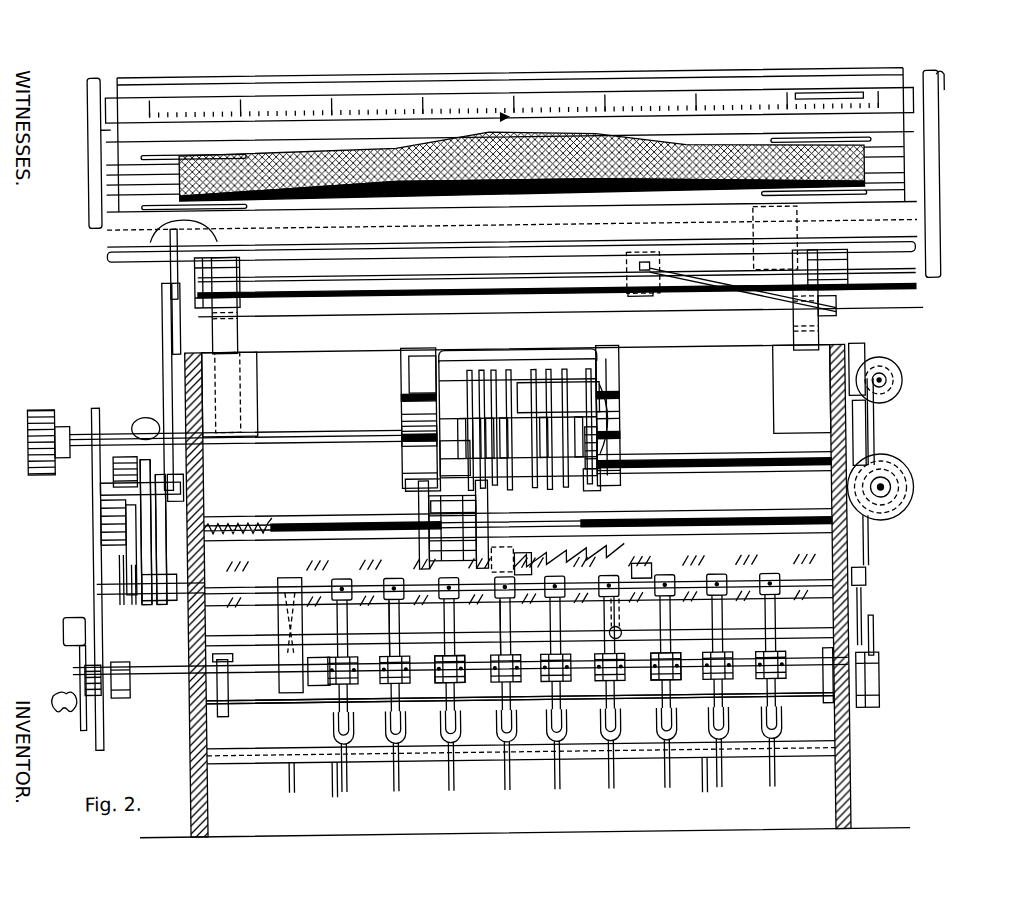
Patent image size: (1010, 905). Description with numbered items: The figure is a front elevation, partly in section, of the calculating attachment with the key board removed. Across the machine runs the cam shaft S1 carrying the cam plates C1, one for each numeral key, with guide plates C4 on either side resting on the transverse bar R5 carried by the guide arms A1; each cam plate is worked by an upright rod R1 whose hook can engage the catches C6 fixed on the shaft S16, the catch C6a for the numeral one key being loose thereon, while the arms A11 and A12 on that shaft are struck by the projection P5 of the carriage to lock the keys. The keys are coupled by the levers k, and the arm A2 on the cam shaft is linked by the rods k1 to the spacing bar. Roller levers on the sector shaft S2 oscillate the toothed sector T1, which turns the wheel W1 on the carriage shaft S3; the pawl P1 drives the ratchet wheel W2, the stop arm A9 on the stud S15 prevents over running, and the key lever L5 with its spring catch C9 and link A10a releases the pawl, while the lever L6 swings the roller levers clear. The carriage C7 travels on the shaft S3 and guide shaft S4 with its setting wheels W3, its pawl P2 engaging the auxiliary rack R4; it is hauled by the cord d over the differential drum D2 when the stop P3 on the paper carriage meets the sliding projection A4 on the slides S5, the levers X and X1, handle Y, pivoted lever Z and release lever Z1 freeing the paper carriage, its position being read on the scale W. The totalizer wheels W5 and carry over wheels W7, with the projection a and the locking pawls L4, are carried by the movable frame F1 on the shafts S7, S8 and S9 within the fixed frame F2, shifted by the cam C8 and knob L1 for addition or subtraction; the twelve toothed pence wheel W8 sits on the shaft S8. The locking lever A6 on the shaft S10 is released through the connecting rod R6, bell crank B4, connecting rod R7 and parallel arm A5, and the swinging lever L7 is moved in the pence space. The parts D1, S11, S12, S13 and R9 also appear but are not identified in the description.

The carriage release lever Z1 is at (92, 223).
The scale W is at (515, 495).
The wheel W1 is at (100, 518).
The stop or projection P3 is at (772, 258).
The pivoted lever Z is at (172, 265).
The lever X is at (846, 272).
The depending lever X1 is at (164, 355).
The sliding projection A4 is at (650, 276).
The cord d is at (838, 314).
The slides S5 is at (640, 300).
The projection a is at (468, 380).
The carry over wheels W7 is at (492, 372).
The movable frame F1 is at (548, 352).
The locking pawl L4 is at (598, 352).
The fixed frame F2 is at (620, 380).
The shaft S9 is at (437, 400).
The spring S13 is at (612, 415).
The shaft S8 is at (600, 440).
The cam C8 is at (417, 448).
The shaft S7 is at (408, 483).
The setting wheels W3 is at (440, 506).
The calculator carriage C7 is at (418, 550).
The twelve toothed wheel W8 is at (596, 482).
The totalizer wheel W5 is at (548, 500).
The arm A11 is at (522, 575).
The auxiliary rack R4 is at (600, 575).
The swinging lever L7 is at (642, 576).
The shaft S16 is at (797, 584).
The locking arm shaft S10 is at (722, 462).
The carriage shaft S3 is at (735, 522).
The guide shaft S4 is at (662, 520).
The knob L1 is at (42, 412).
The pawl P1 is at (121, 452).
The handle Y is at (140, 414).
The stud S15 is at (100, 484).
The stop arm A9 is at (152, 476).
The ratchet wheel W2 is at (126, 545).
The rod R9 is at (120, 560).
The spring catch C9 is at (130, 575).
The connecting rod or link A10a is at (160, 585).
The toothed sector T1 is at (150, 600).
The key lever L5 is at (160, 600).
The lever L6 is at (62, 645).
The sector shaft S2 is at (120, 693).
The cam shaft S1 is at (790, 655).
The guide arm A1 is at (858, 712).
The catch C6a is at (300, 612).
The projection P5 is at (400, 620).
The stop catches C6 is at (668, 630).
The pawl P2 is at (510, 615).
The arm A12 is at (606, 632).
The arm A2 is at (700, 645).
The upright rod R1 is at (665, 712).
The cam plate C1 is at (726, 690).
The guide plates C4 is at (612, 690).
The transverse bar R5 is at (790, 702).
The lever k is at (608, 778).
The rods or links k1 is at (700, 795).
The parallel arm A5 is at (866, 352).
The drum D1 is at (896, 376).
The spring S11 is at (876, 420).
The locking lever A6 is at (868, 450).
The differential drum D2 is at (905, 510).
The connecting rod R7 is at (868, 560).
The spring S12 is at (865, 580).
The bell crank lever B4 is at (860, 610).
The connecting rod R6 is at (872, 640).